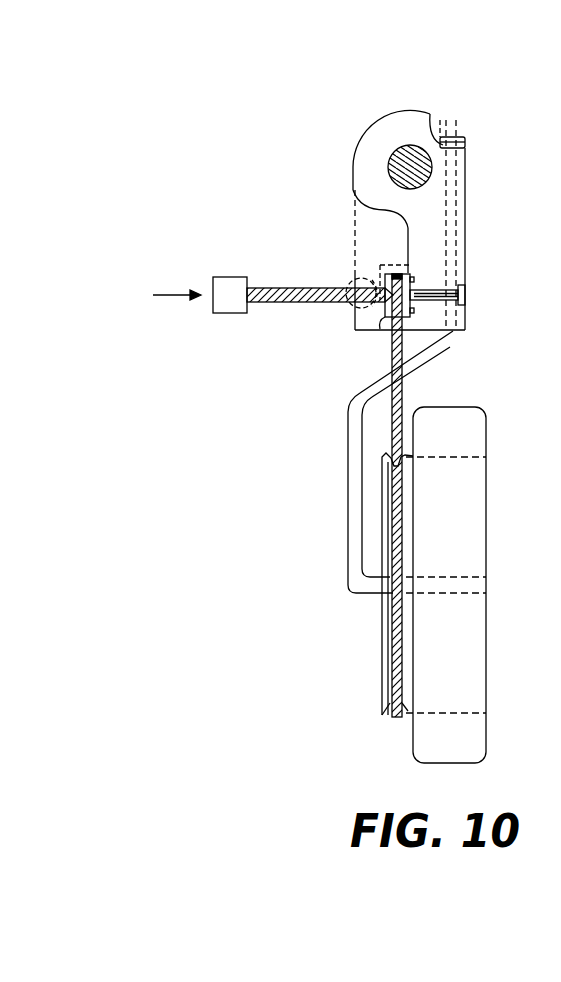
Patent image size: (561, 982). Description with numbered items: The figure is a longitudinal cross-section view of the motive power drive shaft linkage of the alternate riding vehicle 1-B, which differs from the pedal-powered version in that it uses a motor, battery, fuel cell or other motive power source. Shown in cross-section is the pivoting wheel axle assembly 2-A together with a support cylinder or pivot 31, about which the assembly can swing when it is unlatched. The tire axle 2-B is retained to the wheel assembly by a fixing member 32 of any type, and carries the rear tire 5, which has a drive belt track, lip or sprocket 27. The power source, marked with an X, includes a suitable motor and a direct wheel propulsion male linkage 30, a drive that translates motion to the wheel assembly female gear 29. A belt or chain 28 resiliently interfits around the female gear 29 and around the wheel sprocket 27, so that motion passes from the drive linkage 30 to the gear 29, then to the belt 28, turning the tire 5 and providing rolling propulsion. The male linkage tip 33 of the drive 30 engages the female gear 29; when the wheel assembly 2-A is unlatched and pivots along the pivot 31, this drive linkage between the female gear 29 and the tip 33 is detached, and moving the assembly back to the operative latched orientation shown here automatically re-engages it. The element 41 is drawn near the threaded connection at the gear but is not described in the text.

The alternate riding vehicle 1-B is at (277, 243).
The moveable and pivotable wheel axle assembly 2-A is at (368, 152).
The tire axle 2-B is at (347, 531).
The rear tire 5 is at (458, 418).
The sprocket 27 is at (382, 685).
The belt or chain 28 is at (397, 620).
The wheel assembly female gear 29 is at (382, 318).
The direct wheel propulsion male linkage 30 is at (284, 305).
The pivot 31 is at (398, 150).
The fixing member 32 is at (455, 138).
The propulsion linkage male retaining tip 33 is at (353, 313).
The screw 41 is at (413, 313).